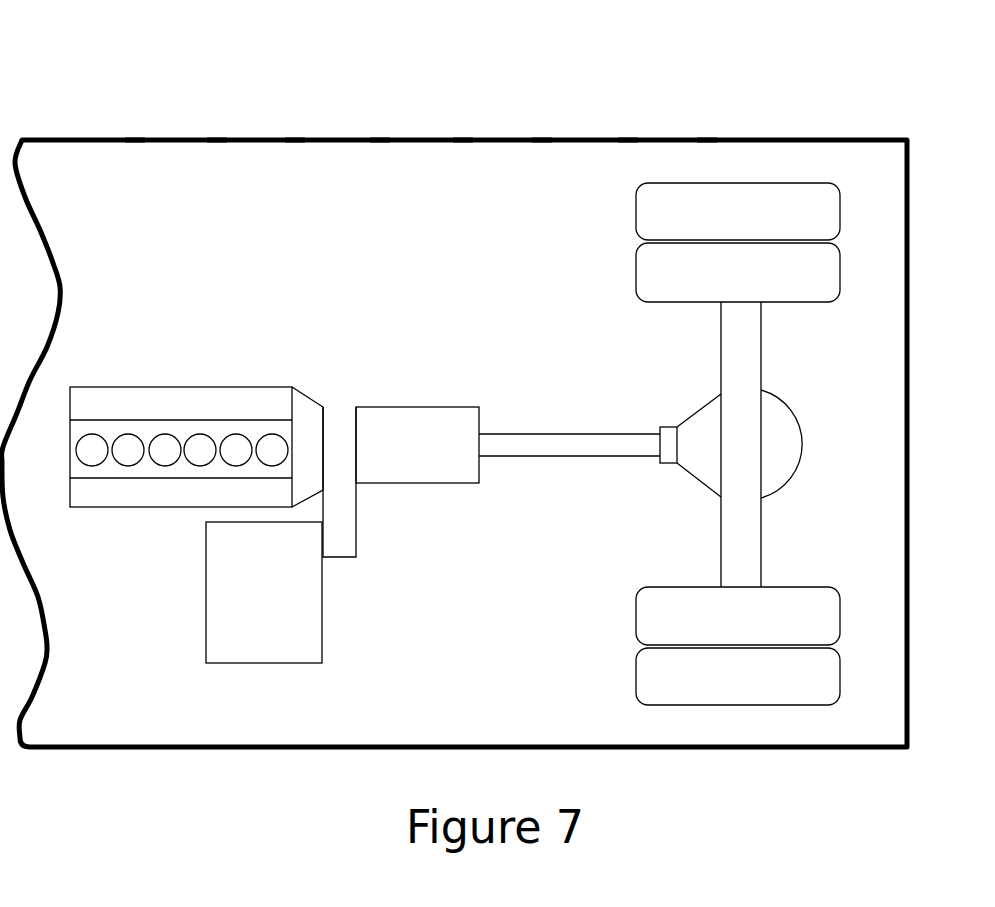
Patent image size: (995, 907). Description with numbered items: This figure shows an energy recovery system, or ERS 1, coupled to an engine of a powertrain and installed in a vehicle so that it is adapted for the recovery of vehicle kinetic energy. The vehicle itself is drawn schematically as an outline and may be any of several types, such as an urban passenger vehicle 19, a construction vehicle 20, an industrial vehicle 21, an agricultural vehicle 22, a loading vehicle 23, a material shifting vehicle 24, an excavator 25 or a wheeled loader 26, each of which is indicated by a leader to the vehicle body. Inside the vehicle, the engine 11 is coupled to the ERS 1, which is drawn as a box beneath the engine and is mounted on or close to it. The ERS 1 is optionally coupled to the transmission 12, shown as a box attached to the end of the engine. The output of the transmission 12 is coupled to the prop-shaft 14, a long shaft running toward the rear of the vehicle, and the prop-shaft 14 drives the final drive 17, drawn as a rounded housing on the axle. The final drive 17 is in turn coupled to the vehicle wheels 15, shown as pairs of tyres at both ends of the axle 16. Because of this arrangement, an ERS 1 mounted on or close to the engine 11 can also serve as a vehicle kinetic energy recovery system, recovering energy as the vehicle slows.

The ERS 1 is at (209, 598).
The engine 11 is at (193, 387).
The transmission 12 is at (420, 406).
The prop-shaft 14 is at (570, 433).
The vehicle wheels 15 is at (842, 213).
The axle 16 is at (752, 357).
The final drive 17 is at (793, 452).
The urban passenger vehicle 19 is at (135, 140).
The construction vehicle 20 is at (217, 140).
The industrial vehicle 21 is at (295, 140).
The agricultural vehicle 22 is at (380, 140).
The loading vehicle 23 is at (463, 140).
The material shifting vehicle 24 is at (542, 140).
The excavator 25 is at (628, 140).
The wheeled loader 26 is at (707, 140).